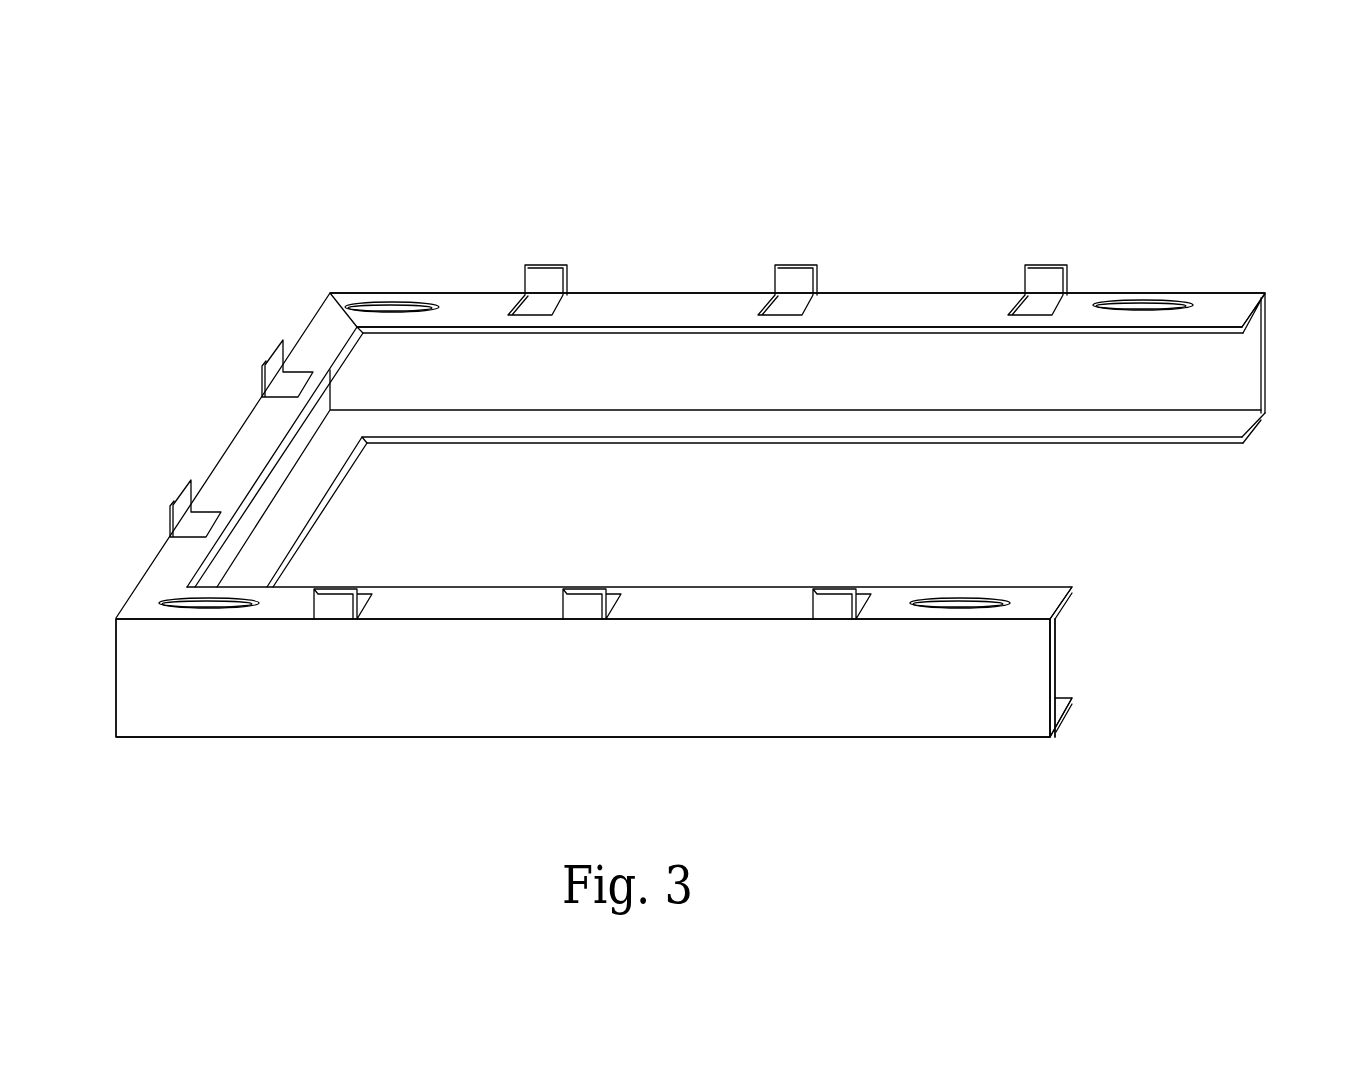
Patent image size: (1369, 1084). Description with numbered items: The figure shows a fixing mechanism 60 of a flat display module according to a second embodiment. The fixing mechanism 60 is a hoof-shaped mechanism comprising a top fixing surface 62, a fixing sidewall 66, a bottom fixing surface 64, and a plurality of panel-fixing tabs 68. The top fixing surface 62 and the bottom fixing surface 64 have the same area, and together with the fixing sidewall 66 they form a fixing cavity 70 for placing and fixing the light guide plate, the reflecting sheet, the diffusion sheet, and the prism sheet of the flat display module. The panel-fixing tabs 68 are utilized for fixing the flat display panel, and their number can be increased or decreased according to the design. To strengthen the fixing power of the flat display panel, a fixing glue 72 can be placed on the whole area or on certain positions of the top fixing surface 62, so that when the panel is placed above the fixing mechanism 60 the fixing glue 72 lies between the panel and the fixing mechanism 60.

The fixing mechanism 60 is at (702, 420).
The top fixing surface 62 is at (718, 305).
The bottom fixing surface 64 is at (1228, 423).
The fixing sidewall 66 is at (142, 690).
The panel-fixing tabs 68 is at (277, 362).
The fixing cavity 70 is at (1093, 675).
The fixing glue 72 is at (410, 305).